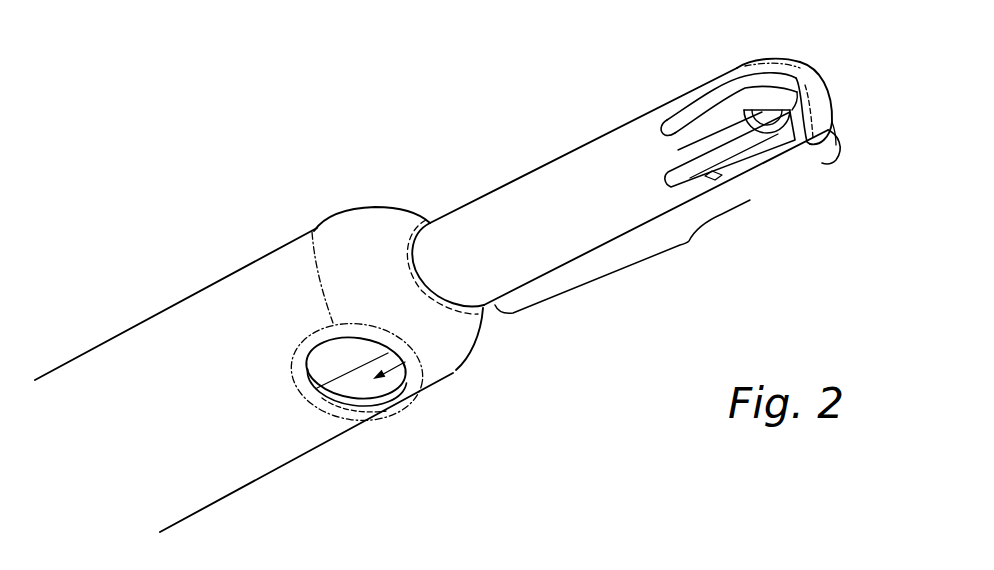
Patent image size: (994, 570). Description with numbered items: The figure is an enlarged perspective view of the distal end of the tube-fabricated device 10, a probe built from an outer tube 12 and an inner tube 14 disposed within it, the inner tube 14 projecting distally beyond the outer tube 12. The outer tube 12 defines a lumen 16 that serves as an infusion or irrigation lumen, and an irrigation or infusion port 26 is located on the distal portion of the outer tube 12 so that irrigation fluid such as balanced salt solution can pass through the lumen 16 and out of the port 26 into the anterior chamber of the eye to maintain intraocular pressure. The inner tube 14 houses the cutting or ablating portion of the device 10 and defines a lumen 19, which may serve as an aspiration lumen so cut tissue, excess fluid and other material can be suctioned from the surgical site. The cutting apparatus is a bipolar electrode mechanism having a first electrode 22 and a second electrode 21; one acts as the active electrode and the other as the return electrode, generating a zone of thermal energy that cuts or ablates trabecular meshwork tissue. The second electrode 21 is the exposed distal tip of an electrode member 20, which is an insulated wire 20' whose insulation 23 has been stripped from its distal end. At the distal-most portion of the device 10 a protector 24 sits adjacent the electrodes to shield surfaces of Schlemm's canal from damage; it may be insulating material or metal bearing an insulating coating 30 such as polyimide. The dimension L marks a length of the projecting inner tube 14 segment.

The tube-fabricated device 10 is at (421, 200).
The outer tube 12 is at (246, 290).
The inner tube 14 is at (557, 183).
The lumen 16 is at (408, 370).
The lumen 19 is at (698, 133).
The electrode member 20 is at (739, 78).
The insulated wire 20' is at (750, 204).
The second electrode 21 is at (773, 122).
The first electrode 22 is at (775, 95).
The insulation 23 is at (698, 153).
The protector 24 is at (823, 101).
The irrigation or infusion port 26 is at (387, 410).
The coating 30 is at (825, 118).
The length L is at (622, 256).